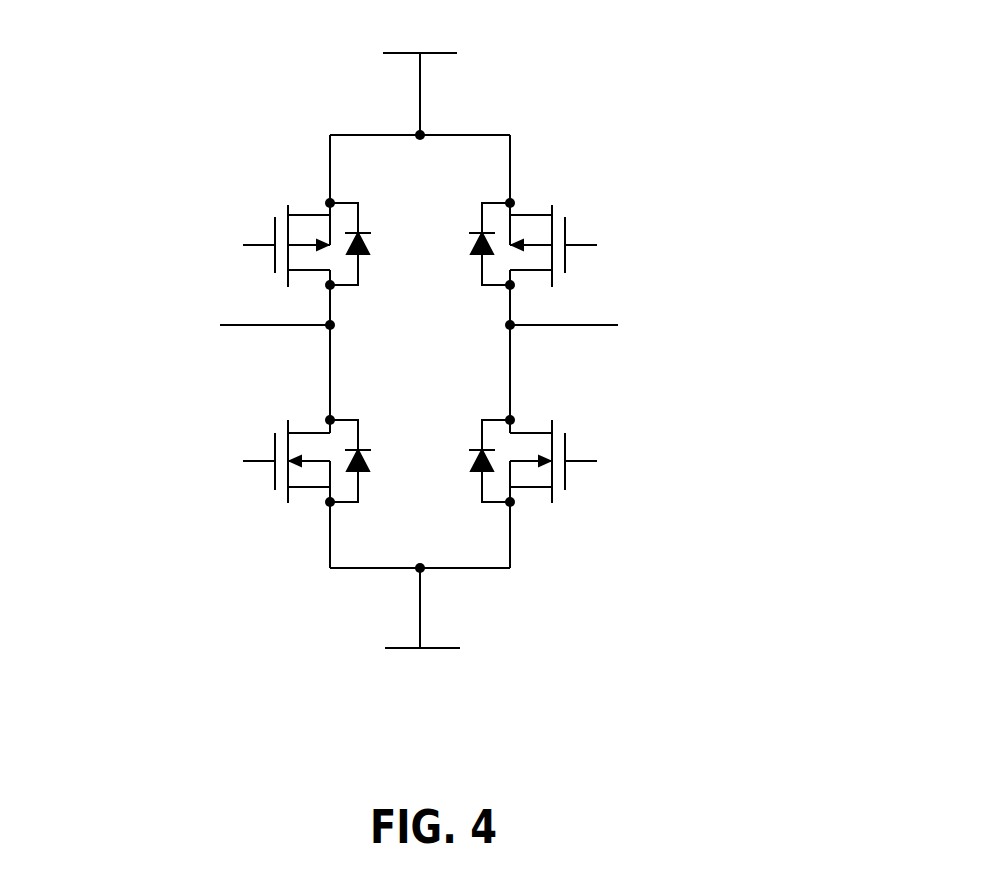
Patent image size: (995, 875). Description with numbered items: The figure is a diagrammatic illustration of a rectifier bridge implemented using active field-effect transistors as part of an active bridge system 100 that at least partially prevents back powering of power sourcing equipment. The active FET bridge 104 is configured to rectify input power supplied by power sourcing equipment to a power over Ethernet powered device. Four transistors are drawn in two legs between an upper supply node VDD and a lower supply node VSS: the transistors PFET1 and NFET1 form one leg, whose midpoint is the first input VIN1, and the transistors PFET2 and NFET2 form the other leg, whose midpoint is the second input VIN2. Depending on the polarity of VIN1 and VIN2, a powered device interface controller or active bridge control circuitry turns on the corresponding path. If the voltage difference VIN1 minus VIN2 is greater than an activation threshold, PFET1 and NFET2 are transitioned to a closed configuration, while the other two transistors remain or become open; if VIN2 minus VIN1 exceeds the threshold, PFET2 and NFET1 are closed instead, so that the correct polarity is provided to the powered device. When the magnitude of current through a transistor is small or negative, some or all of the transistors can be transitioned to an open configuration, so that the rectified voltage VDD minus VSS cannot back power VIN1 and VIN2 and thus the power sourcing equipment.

The active bridge system 100 is at (441, 354).
The active field-effect transistor (FET) bridge 104 is at (208, 351).
The element VDD is at (420, 73).
The element VSS is at (422, 632).
The element VIN1 is at (243, 322).
The element VIN2 is at (600, 322).
The element PFET1 is at (279, 229).
The element PFET2 is at (562, 229).
The element NFET1 is at (277, 473).
The element NFET2 is at (563, 473).